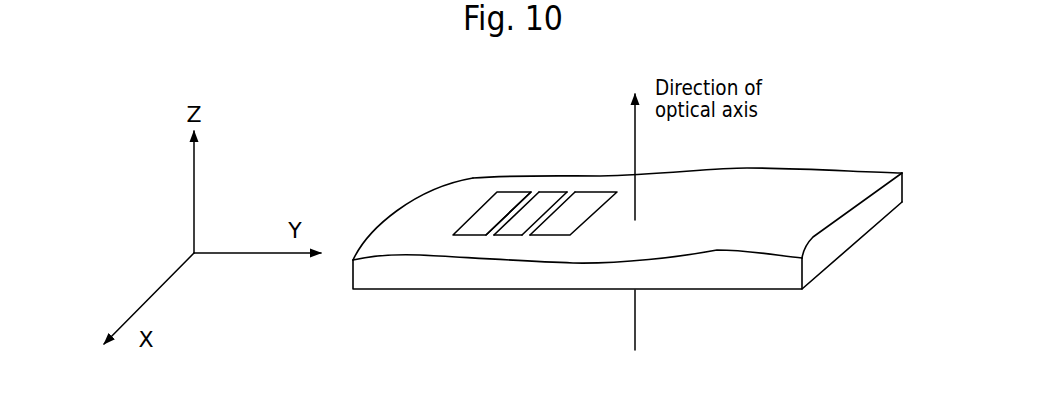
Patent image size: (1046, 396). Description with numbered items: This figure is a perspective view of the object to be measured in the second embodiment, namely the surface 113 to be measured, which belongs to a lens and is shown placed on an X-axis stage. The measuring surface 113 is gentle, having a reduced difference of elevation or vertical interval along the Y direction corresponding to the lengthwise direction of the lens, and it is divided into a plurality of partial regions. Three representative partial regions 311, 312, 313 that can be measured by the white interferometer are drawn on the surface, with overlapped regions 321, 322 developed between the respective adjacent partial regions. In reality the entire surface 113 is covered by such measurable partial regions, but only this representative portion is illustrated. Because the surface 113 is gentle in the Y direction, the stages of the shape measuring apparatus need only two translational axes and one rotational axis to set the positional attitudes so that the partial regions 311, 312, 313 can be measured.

The measuring surface 113 is at (770, 182).
The partial region 311 is at (503, 203).
The partial region 312 is at (550, 202).
The partial region 313 is at (597, 202).
The overlapped region 321 is at (533, 202).
The overlapped region 322 is at (530, 235).